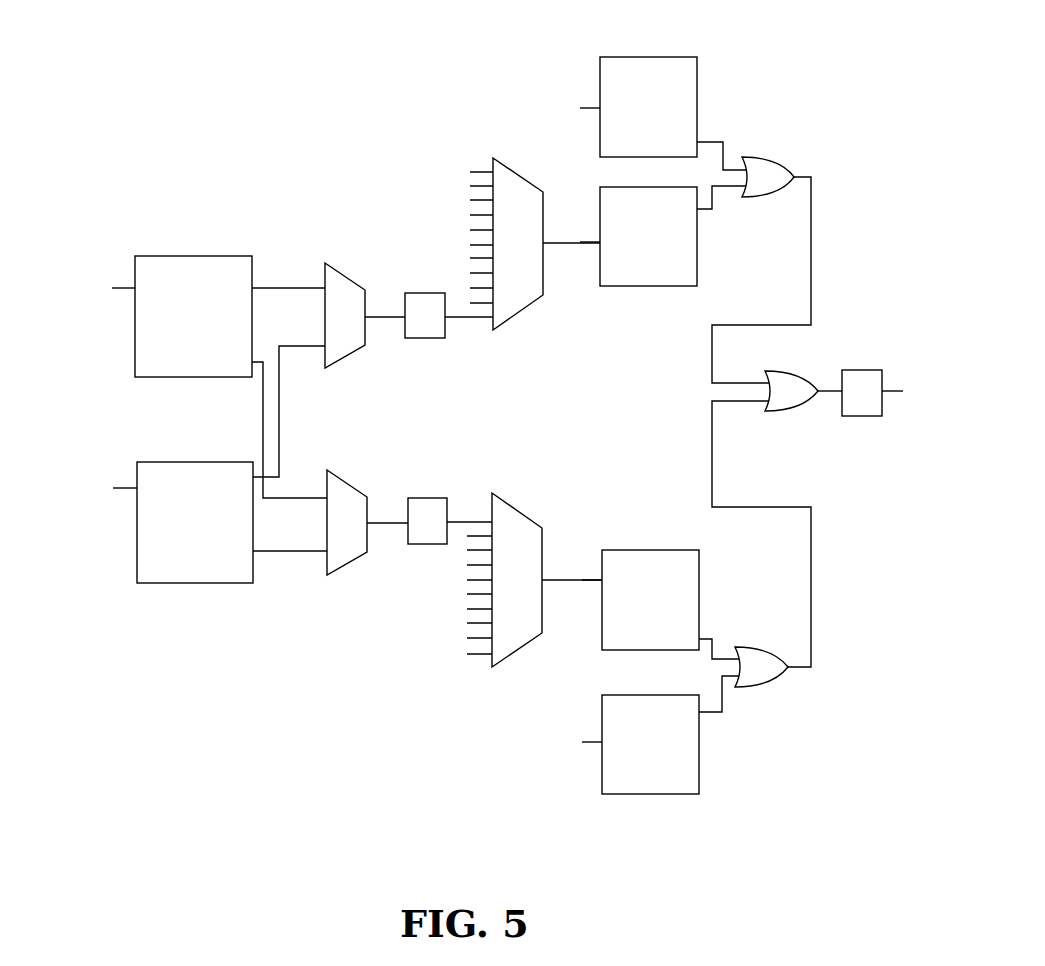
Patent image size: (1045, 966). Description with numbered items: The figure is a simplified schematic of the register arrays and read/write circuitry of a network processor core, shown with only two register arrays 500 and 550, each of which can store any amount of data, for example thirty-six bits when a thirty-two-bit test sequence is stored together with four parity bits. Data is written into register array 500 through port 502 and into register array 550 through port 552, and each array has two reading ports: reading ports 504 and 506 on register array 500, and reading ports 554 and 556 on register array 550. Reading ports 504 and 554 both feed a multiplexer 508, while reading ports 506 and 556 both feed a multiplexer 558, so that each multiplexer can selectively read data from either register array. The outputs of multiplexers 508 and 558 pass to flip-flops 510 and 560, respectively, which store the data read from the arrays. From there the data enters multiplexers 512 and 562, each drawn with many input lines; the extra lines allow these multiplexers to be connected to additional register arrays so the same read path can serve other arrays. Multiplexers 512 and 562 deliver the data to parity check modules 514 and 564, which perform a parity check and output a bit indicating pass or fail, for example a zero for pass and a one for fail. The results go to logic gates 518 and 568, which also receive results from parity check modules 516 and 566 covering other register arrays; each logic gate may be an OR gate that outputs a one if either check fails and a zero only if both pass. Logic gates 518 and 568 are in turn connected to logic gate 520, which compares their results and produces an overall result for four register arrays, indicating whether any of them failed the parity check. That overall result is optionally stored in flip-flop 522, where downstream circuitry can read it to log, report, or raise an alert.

The register array 500 is at (195, 256).
The port 502 is at (128, 288).
The reading port 504 is at (280, 268).
The reading port 506 is at (260, 356).
The multiplexer 508 is at (340, 268).
The flip-flop 510 is at (427, 338).
The multiplexer 512 is at (527, 180).
The parity check module 514 is at (628, 286).
The parity check module 516 is at (668, 57).
The logic gate 518 is at (770, 157).
The logic gate 520 is at (806, 373).
The flip-flop 522 is at (872, 370).
The register array 550 is at (193, 462).
The port 552 is at (128, 486).
The reading port 554 is at (257, 477).
The reading port 556 is at (256, 553).
The multiplexer 558 is at (341, 472).
The flip-flop 560 is at (428, 498).
The multiplexer 562 is at (516, 513).
The parity check module 564 is at (641, 550).
The parity check module 566 is at (665, 794).
The logic gate 568 is at (772, 684).